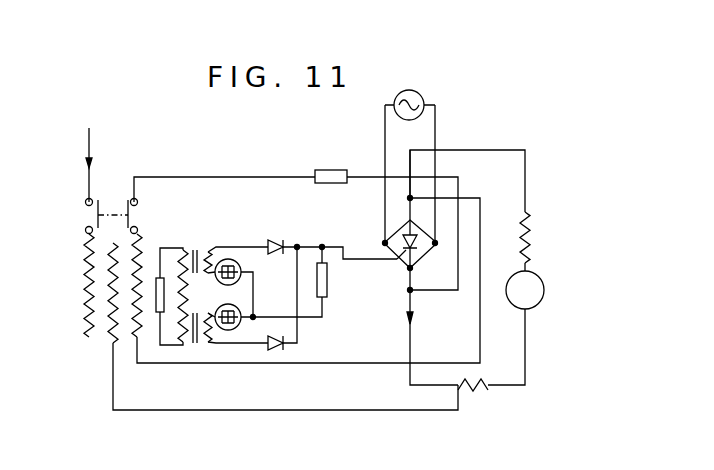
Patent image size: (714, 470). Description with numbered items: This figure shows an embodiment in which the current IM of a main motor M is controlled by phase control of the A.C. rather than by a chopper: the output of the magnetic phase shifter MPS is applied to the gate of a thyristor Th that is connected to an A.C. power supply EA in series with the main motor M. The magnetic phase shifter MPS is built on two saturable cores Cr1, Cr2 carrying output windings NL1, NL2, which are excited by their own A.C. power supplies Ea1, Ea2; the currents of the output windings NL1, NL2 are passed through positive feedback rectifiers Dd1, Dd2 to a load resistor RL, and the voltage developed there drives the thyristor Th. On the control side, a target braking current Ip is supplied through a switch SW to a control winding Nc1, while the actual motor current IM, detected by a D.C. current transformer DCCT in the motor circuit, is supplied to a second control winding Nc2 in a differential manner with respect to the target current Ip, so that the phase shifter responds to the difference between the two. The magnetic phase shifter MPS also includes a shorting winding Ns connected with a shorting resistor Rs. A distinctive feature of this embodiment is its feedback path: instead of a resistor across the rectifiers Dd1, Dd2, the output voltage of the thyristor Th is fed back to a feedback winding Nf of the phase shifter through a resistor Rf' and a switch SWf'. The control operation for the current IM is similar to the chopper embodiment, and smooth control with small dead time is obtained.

The target braking current Ip is at (97, 165).
The switch SW is at (86, 216).
The switch SWf' is at (163, 212).
The control winding Nc1 is at (87, 302).
The control winding Nc2 is at (107, 322).
The feedback winding Nf is at (136, 318).
The shorting resistor Rs is at (158, 278).
The saturable core Cr1 is at (195, 250).
The saturable core Cr2 is at (195, 345).
The shorting winding Ns is at (187, 291).
The output winding NL1 is at (213, 252).
The output winding NL2 is at (218, 345).
The A.C. power supply Ea1 is at (246, 269).
The A.C. power supply Ea2 is at (248, 303).
The positive feedback rectifier Dd1 is at (279, 243).
The positive feedback rectifier Dd2 is at (288, 348).
The load resistor RL is at (328, 279).
The resistor Rf' is at (331, 161).
The A.C. power supply EA is at (423, 100).
The thyristor Th is at (415, 264).
The braking current IM is at (421, 328).
The main motor M is at (538, 303).
The D.C. current transformer DCCT is at (460, 394).
The magnetic phase shifter MPS is at (346, 399).